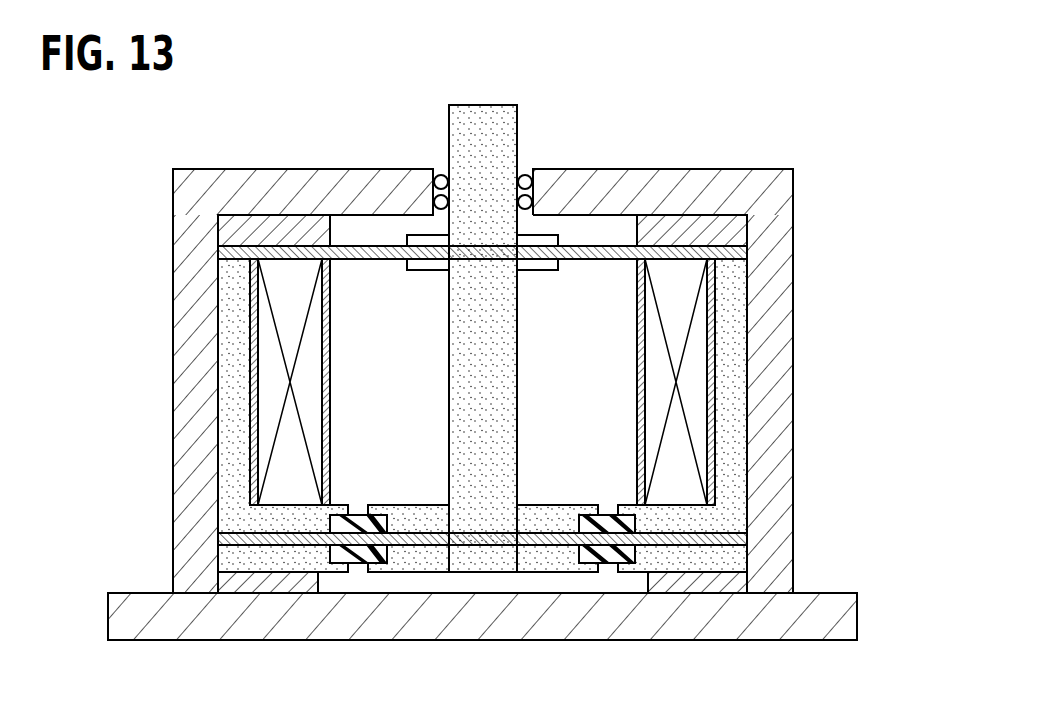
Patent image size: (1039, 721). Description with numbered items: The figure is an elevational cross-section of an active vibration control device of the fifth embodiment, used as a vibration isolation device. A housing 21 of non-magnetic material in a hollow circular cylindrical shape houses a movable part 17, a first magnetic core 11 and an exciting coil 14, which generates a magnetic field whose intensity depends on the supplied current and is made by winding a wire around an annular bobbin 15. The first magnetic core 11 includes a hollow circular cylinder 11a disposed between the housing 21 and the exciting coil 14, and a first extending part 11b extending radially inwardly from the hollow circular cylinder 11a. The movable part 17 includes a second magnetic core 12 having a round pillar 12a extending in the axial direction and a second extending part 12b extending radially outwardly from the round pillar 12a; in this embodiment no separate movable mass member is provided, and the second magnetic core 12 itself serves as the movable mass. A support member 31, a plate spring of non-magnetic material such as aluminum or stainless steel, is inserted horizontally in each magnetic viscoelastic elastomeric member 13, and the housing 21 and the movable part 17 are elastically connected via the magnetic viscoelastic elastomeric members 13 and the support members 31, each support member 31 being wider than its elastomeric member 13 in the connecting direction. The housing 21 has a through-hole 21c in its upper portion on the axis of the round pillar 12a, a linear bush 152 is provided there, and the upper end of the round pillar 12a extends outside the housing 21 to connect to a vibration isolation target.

The first magnetic core 11 is at (570, 532).
The hollow circular cylinder 11a is at (737, 490).
The first extending part 11b is at (703, 560).
The second magnetic core 12 is at (538, 292).
The round pillar 12a is at (482, 134).
The second extending part 12b is at (592, 168).
The magnetic viscoelastic elastomeric member 13 is at (359, 246).
The exciting coil 14 is at (272, 367).
The bobbin 15 is at (258, 427).
The movable part 17 is at (411, 235).
The housing 21 is at (173, 221).
The through-hole 21c is at (433, 172).
The support member 31 is at (307, 267).
The linear bush 152 is at (522, 167).